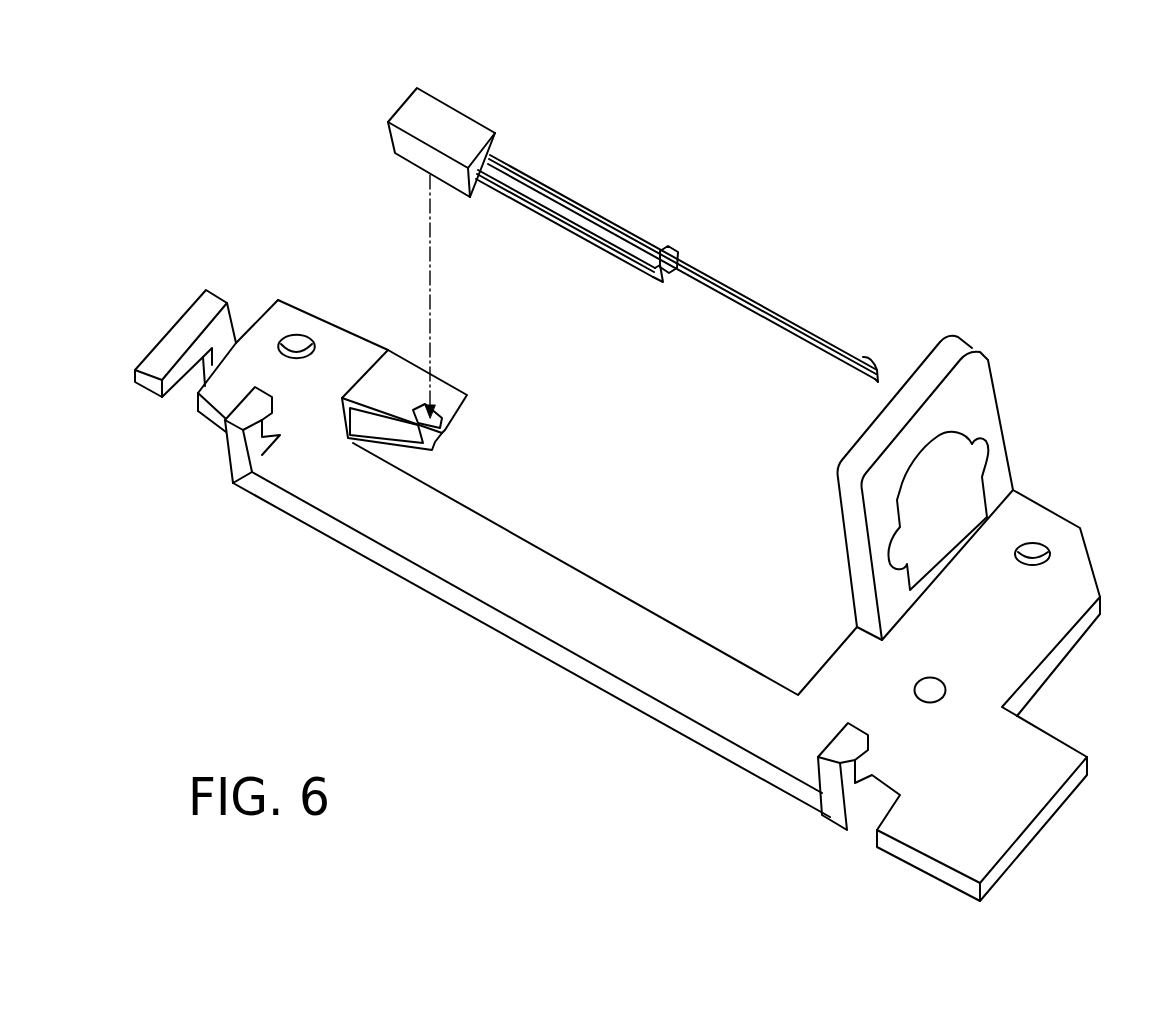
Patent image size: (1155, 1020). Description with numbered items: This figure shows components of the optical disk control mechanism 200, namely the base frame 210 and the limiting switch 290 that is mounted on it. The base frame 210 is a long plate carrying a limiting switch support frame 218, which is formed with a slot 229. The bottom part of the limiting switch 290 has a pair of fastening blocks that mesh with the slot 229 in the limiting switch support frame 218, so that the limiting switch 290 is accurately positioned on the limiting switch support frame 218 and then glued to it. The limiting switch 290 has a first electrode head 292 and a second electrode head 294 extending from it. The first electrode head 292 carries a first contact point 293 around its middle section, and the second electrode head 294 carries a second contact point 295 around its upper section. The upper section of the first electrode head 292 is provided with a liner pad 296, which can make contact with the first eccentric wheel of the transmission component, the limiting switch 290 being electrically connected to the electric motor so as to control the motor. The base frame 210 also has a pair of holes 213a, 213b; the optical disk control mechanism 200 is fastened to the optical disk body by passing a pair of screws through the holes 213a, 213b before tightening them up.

The optical disk control mechanism 200 is at (593, 783).
The base frame 210 is at (932, 842).
The hole 213a is at (293, 346).
The hole 213b is at (1040, 551).
The limiting switch support frame 218 is at (385, 377).
The slot 229 is at (446, 438).
The limiting switch 290 is at (410, 108).
The first electrode head 292 is at (522, 167).
The first contact point 293 is at (668, 252).
The second electrode head 294 is at (513, 195).
The second contact point 295 is at (663, 283).
The liner pad 296 is at (872, 357).